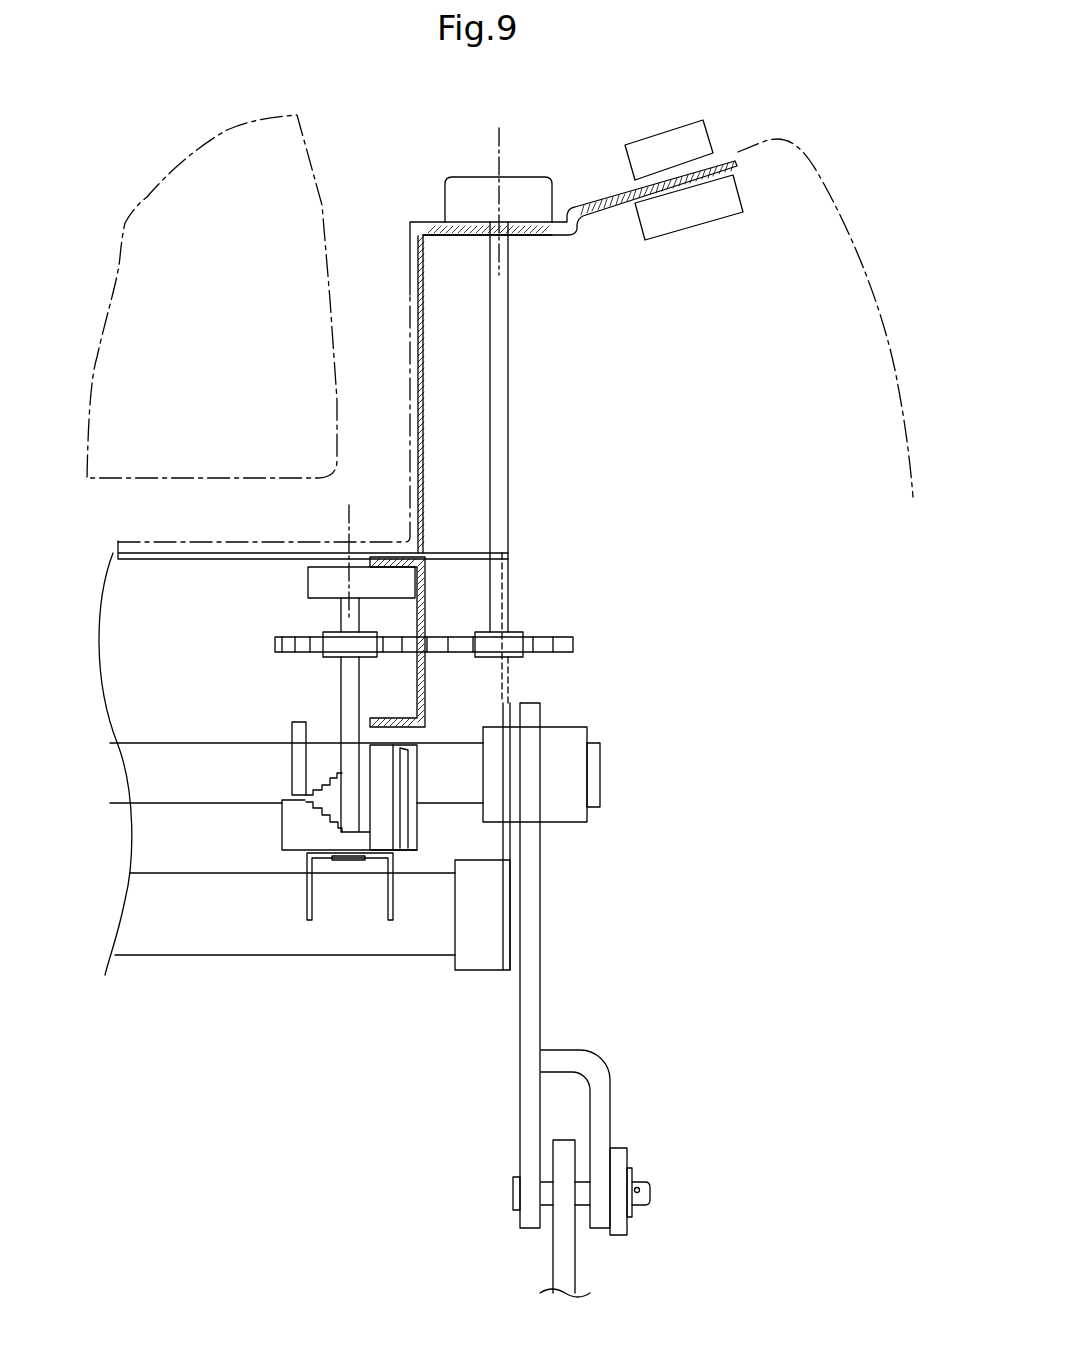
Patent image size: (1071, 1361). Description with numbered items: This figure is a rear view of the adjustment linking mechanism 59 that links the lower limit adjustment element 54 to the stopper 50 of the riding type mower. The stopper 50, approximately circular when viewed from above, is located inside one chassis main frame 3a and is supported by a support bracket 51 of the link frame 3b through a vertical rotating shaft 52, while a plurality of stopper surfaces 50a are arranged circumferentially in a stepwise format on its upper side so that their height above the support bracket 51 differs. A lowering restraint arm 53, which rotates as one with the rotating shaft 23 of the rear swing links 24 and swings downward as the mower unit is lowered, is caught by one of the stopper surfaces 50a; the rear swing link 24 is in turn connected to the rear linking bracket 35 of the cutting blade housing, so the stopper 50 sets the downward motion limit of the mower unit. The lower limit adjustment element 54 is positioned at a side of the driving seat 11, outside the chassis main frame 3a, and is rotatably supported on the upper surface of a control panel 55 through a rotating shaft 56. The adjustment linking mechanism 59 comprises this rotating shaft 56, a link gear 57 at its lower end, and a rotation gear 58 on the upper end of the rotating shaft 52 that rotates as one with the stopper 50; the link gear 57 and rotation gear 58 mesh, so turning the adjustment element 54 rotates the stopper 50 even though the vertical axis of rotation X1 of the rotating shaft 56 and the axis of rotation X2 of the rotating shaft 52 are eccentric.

The chassis main frame 3a is at (477, 1004).
The link frame 3b is at (217, 940).
The driving seat 11 is at (325, 232).
The rotating shaft 23 is at (173, 750).
The rear swing link 24 is at (531, 917).
The rear linking bracket 35 is at (567, 1267).
The stopper 50 is at (279, 818).
The stopper surface 50a is at (304, 795).
The support bracket 51 is at (307, 906).
The rotating shaft 52 is at (345, 689).
The lowering restraint arm 53 is at (290, 757).
The lower limit adjustment element 54 is at (473, 176).
The control panel 55 is at (548, 235).
The rotating shaft 56 is at (503, 432).
The link gear 57 is at (573, 644).
The rotation gear 58 is at (274, 645).
The adjustment linking mechanism 59 is at (510, 519).
The axis of rotation X1 is at (503, 187).
The axis of rotation X2 is at (353, 549).